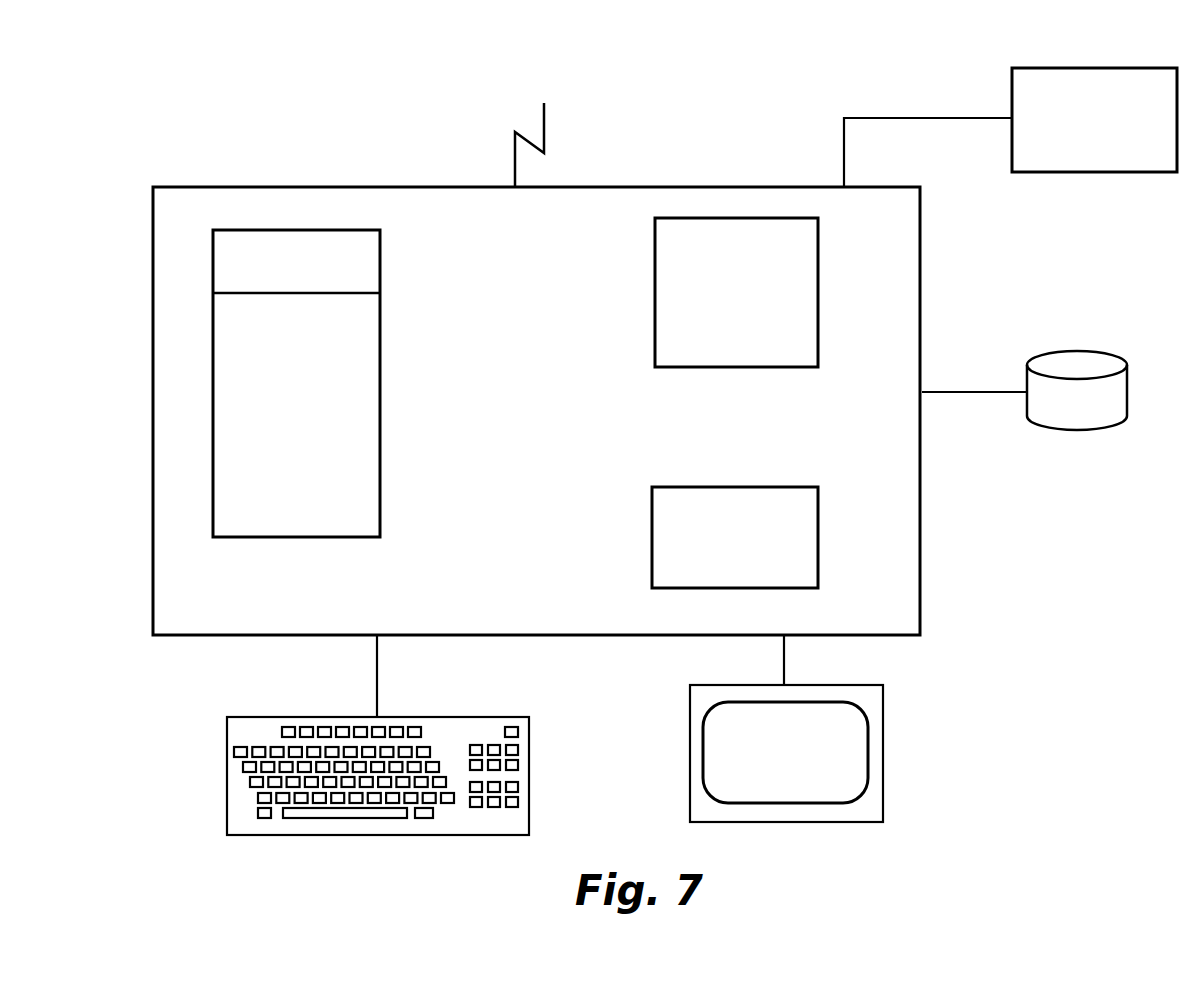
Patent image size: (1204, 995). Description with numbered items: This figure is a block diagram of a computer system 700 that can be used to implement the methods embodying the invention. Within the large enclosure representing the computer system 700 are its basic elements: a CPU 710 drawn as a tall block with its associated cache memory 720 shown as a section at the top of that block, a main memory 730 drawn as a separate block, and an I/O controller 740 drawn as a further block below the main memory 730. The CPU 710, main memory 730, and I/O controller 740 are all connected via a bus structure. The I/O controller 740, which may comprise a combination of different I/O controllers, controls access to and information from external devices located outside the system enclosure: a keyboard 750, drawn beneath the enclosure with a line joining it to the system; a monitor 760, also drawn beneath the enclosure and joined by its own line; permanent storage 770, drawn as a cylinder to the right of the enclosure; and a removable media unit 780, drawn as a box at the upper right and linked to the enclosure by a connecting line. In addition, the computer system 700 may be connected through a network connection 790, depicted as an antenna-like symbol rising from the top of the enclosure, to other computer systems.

The computer system 700 is at (168, 180).
The CPU 710 is at (382, 465).
The cache memory 720 is at (382, 263).
The main memory 730 is at (735, 368).
The I/O controller 740 is at (650, 548).
The keyboard 750 is at (226, 777).
The monitor 760 is at (688, 745).
The permanent storage 770 is at (1088, 430).
The removable media unit 780 is at (1118, 172).
The network connection 790 is at (513, 148).